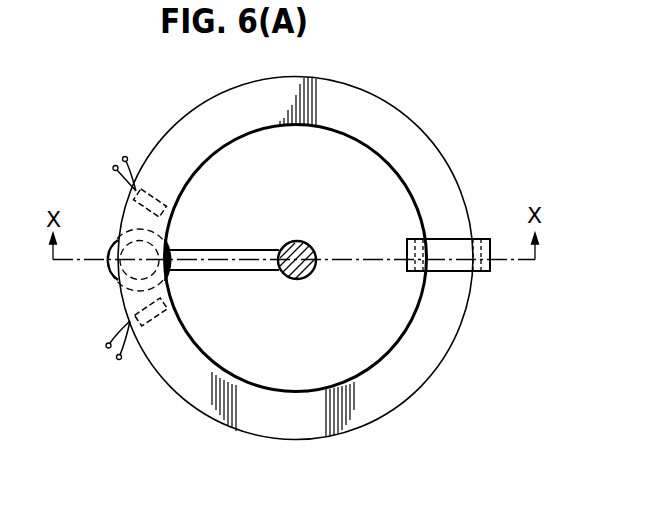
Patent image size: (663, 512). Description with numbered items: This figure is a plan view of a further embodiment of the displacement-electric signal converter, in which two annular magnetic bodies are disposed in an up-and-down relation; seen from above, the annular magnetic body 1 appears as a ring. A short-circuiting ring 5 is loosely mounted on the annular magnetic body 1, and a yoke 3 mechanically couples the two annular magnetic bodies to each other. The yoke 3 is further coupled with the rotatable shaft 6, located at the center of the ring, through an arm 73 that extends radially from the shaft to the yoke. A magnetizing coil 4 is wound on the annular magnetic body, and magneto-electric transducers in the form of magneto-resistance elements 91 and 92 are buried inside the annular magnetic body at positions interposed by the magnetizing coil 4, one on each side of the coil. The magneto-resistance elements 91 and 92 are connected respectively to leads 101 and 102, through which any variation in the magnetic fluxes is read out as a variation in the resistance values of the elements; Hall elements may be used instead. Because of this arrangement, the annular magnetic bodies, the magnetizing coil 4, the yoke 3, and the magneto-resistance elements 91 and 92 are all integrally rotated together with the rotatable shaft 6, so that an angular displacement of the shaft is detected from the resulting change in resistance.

The annular magnetic body 1 is at (441, 153).
The yoke 3 is at (128, 250).
The magnetizing coil 4 is at (110, 272).
The short-circuiting ring 5 is at (478, 239).
The rotatable shaft 6 is at (313, 252).
The arm 73 is at (247, 250).
The magneto-resistance element 91 is at (167, 209).
The magneto-resistance element 92 is at (168, 305).
The lead 101 is at (108, 157).
The lead 102 is at (110, 354).